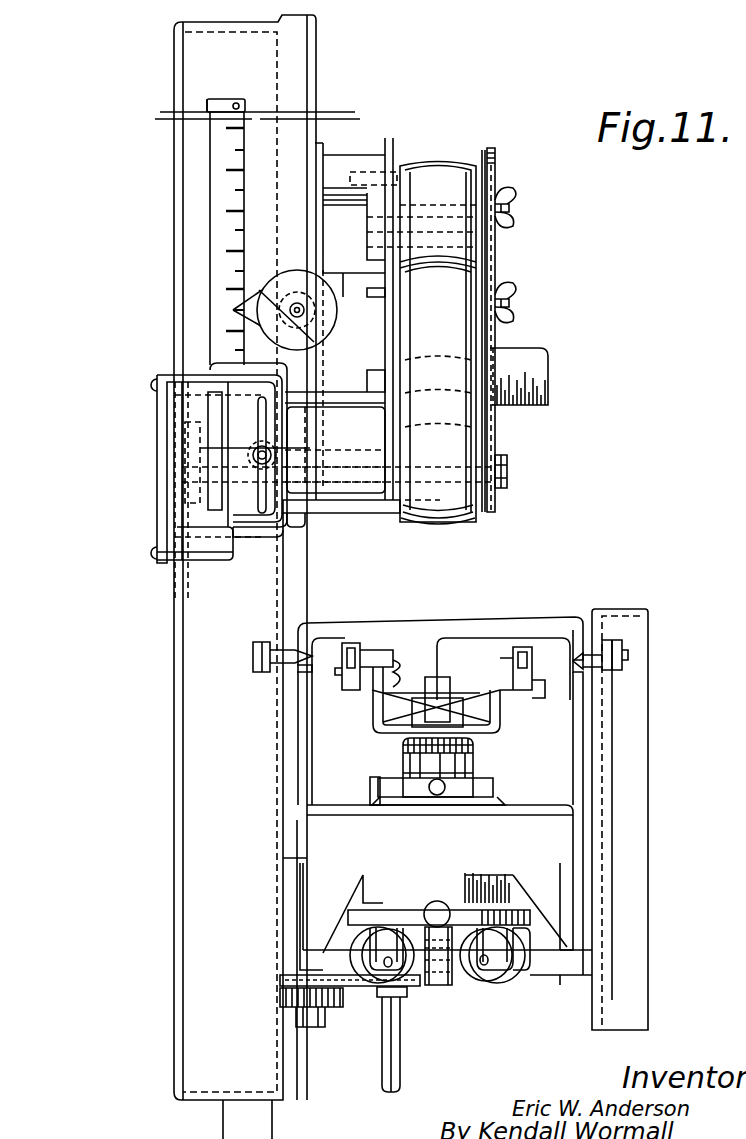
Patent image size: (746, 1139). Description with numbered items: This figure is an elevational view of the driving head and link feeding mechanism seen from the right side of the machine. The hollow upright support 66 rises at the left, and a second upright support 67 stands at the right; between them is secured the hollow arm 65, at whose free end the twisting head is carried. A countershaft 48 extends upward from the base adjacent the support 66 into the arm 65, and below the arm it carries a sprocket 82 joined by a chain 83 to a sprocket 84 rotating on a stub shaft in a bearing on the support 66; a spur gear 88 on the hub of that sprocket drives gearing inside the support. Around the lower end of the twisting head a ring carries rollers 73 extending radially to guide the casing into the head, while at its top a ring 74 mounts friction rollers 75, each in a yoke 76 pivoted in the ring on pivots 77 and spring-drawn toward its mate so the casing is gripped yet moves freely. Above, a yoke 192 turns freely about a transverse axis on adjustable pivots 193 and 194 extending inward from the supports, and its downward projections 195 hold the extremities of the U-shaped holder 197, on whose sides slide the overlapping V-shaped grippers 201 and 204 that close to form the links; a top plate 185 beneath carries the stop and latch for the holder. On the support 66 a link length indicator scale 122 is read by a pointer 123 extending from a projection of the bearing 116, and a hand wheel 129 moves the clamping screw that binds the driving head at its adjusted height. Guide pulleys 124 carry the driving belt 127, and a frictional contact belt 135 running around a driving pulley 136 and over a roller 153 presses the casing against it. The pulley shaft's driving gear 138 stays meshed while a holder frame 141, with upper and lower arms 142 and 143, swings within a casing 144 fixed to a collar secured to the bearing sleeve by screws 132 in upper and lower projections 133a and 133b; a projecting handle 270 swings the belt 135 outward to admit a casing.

The upright support 66 is at (190, 63).
The link length indicator scale 122 is at (222, 230).
The pointer 123 is at (248, 304).
The hand wheel 129 is at (290, 270).
The bearing 116 is at (355, 284).
The belt 127 is at (451, 165).
The guide pulleys 124 is at (416, 262).
The roller 153 is at (421, 360).
The driving pulley 136 is at (432, 428).
The frictional contact belt 135 is at (465, 350).
The projecting handle 270 is at (540, 378).
The holder frame 141 is at (331, 396).
The upper arm 142 is at (247, 380).
The casing 144 is at (172, 494).
The driving gear 138 is at (197, 432).
The upper projection 133a is at (207, 397).
The lower projection 133b is at (192, 552).
The screws 132 is at (155, 390).
The lower arm 143 is at (250, 548).
The yoke 192 is at (340, 640).
The adjustable pivot 193 is at (288, 670).
The adjustable pivot 194 is at (587, 668).
The downward projections 195 is at (385, 650).
The gripper 204 is at (438, 690).
The gripper 201 is at (412, 710).
The U-shaped holder 197 is at (372, 735).
The yoke 76 is at (470, 750).
The pivots 77 is at (478, 763).
The friction rollers 75 is at (490, 776).
The ring 74 is at (483, 791).
The top plate 185 is at (540, 818).
The arm 65 is at (366, 890).
The sprocket 82 is at (413, 985).
The sprocket 84 is at (335, 980).
The rollers 73 is at (440, 975).
The chain 83 is at (356, 986).
The spur gear 88 is at (330, 1008).
The countershaft 48 is at (380, 1052).
The upright support 67 is at (632, 928).